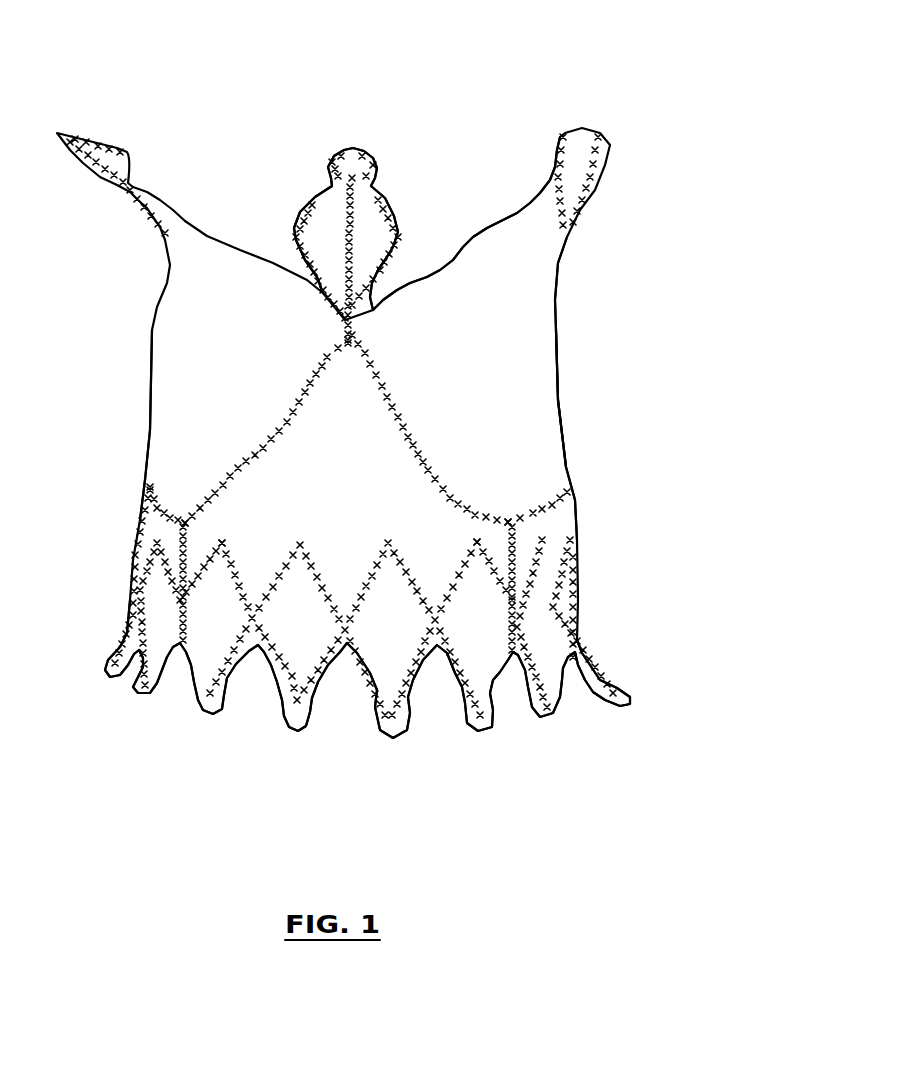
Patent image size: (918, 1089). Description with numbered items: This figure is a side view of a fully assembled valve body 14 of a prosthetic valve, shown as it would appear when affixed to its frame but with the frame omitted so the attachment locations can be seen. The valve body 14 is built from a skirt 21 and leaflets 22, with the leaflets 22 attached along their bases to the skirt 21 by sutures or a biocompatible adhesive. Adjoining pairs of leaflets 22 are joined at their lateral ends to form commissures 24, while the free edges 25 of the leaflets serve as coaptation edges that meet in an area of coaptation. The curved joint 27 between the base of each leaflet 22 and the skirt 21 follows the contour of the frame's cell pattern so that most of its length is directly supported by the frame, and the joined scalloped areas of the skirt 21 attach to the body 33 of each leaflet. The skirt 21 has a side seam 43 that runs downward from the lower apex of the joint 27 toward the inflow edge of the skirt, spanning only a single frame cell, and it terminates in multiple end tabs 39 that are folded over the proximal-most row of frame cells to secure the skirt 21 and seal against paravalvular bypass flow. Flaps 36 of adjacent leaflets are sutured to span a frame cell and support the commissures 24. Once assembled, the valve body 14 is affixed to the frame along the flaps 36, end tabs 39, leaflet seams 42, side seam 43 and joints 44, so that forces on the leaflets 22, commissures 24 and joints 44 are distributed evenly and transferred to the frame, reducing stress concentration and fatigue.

The valve body 14 is at (630, 206).
The skirt 21 is at (273, 537).
The leaflets 22 is at (557, 267).
The commissures 24 is at (83, 148).
The free edges 25 is at (490, 230).
The joint 27 is at (250, 463).
The body 33 is at (182, 370).
The flaps 36 is at (322, 228).
The end tabs 39 is at (370, 713).
The leaflet seams 42 is at (343, 208).
The side seam 43 is at (183, 537).
The joints 44 is at (150, 510).